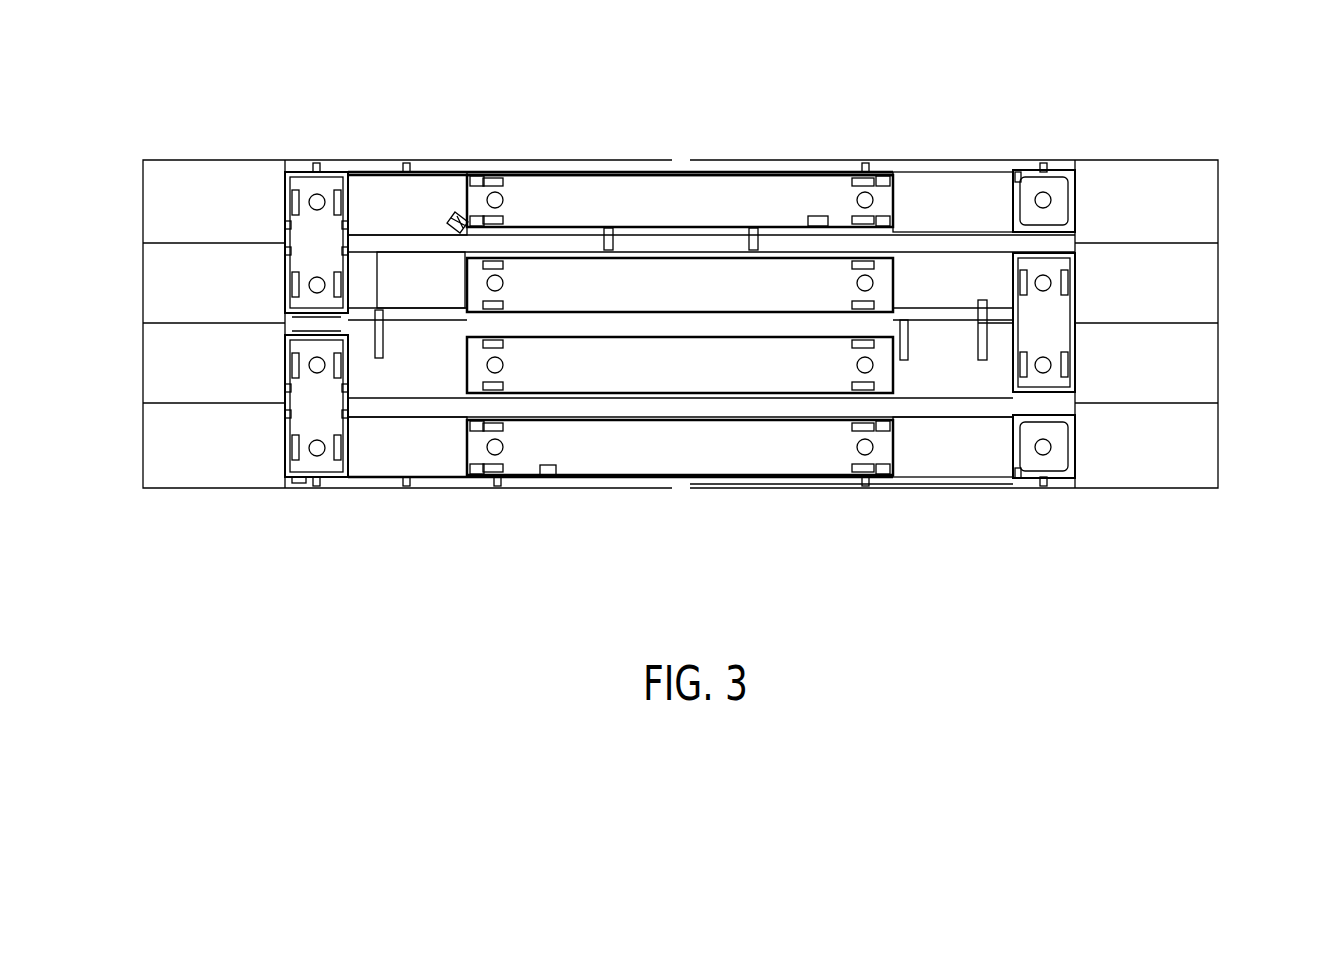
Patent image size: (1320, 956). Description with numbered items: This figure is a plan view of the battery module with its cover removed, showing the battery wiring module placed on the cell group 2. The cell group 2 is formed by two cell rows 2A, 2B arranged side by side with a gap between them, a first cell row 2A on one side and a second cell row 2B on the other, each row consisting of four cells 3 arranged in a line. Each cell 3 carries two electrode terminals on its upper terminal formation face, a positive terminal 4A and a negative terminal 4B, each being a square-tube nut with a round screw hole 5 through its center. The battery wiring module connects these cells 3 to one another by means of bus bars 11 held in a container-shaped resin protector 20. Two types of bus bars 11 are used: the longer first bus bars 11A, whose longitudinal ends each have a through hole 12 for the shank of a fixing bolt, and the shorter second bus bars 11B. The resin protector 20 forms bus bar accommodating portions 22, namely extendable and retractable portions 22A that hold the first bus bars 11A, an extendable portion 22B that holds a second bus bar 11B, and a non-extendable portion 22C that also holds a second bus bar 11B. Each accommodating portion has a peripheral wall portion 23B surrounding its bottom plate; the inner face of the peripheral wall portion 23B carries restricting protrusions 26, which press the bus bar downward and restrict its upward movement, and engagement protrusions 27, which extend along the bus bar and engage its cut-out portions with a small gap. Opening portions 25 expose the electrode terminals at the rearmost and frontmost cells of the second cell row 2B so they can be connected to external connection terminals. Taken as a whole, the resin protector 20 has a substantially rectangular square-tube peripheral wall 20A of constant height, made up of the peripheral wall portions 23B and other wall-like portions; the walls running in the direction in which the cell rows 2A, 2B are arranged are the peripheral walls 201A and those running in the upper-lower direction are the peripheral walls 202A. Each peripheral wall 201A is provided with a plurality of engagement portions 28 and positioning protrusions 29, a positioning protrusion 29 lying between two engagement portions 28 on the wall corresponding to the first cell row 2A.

The cell group 2 is at (1267, 162).
The first cell row 2A is at (425, 171).
The second cell row 2B is at (1108, 160).
The cell 3 is at (152, 465).
The positive terminal 4A is at (283, 195).
The negative terminal 4B is at (287, 283).
The screw hole 5 is at (322, 194).
The bus bar 11 is at (737, 325).
The first bus bar 11A is at (637, 283).
The second bus bar 11B is at (335, 467).
The through hole 12 is at (292, 305).
The resin protector 20 is at (954, 104).
The peripheral wall 20A is at (722, 297).
The peripheral wall (in cell-row arrangement direction) 201A is at (980, 172).
The peripheral wall (in upper-lower direction) 202A is at (285, 203).
The bus bar accommodating portion 22 is at (680, 344).
The bus bar accommodating portion (first) 22A is at (580, 184).
The bus bar accommodating portion (second) 22B is at (1027, 393).
The bus bar accommodating portion (third) 22C is at (299, 483).
The peripheral wall portion 23B is at (712, 175).
The opening portion 25 is at (1022, 172).
The restricting protrusion 26 is at (815, 220).
The engagement protrusion 27 is at (288, 452).
The engagement portion 28 is at (316, 165).
The positioning protrusion 29 is at (405, 165).